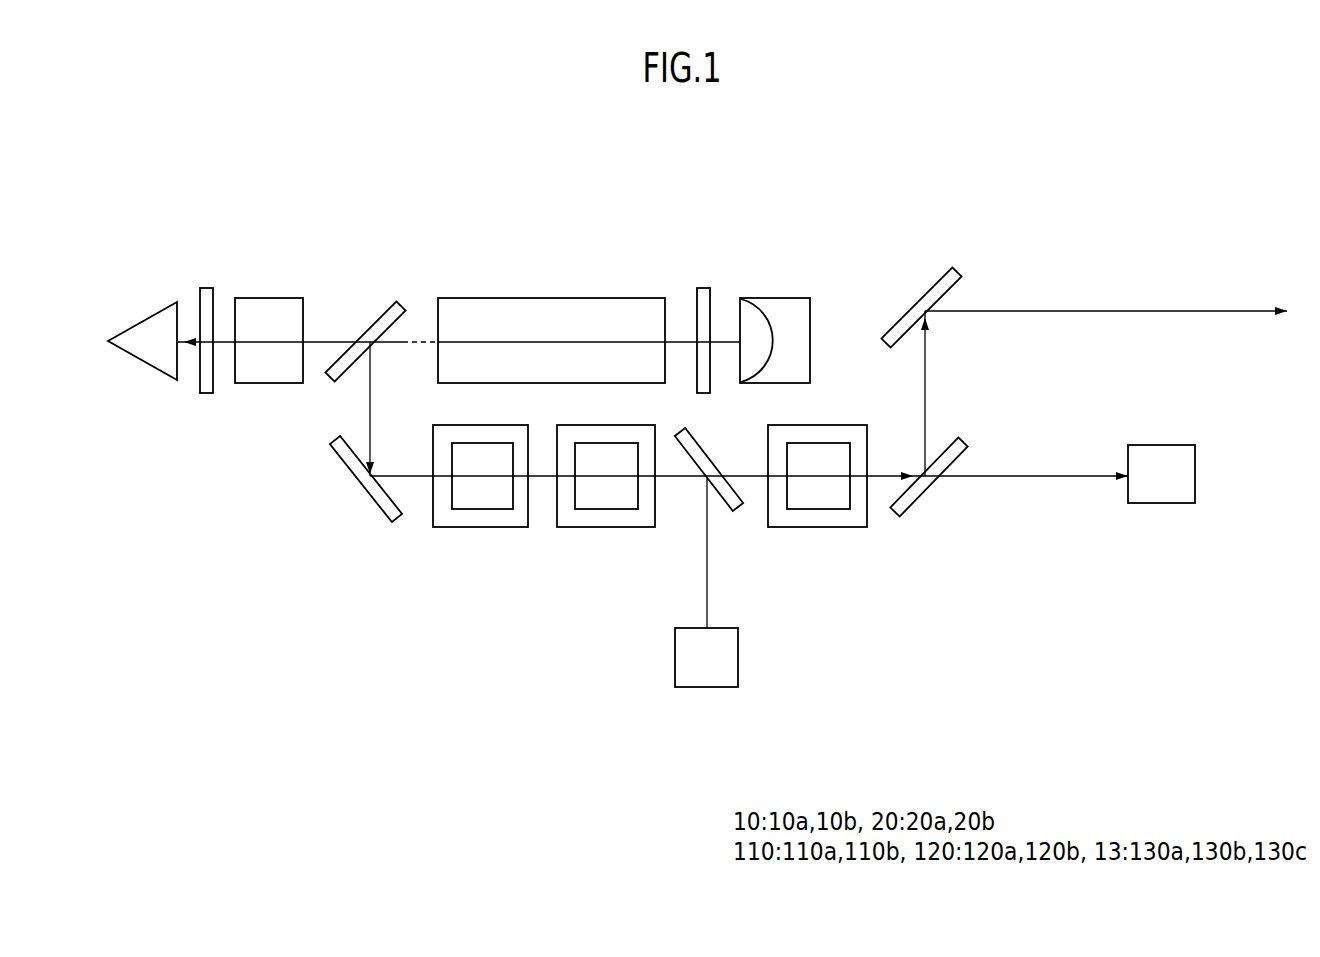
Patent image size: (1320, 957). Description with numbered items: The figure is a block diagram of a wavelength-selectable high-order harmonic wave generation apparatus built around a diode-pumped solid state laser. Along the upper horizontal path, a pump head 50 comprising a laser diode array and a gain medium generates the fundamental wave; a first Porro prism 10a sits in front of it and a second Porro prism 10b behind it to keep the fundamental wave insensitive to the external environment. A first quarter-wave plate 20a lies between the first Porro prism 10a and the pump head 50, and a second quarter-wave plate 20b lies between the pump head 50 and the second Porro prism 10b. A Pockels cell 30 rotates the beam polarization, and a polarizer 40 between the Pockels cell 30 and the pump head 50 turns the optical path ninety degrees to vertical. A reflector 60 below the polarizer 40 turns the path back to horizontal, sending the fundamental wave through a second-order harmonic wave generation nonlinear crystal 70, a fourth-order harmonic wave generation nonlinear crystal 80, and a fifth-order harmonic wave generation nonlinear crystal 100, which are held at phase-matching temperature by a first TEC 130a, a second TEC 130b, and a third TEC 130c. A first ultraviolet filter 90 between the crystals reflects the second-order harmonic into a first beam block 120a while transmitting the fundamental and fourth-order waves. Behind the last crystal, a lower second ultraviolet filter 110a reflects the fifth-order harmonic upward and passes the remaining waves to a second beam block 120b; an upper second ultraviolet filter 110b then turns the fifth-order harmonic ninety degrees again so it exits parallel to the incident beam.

The first Porro prism 10a is at (143, 320).
The second Porro prism 10b is at (775, 298).
The first quarter-wave plate 20a is at (207, 288).
The second quarter-wave plate 20b is at (700, 290).
The Pockels cell 30 is at (268, 298).
The polarizer 40 is at (372, 323).
The pump head 50 is at (550, 298).
The reflector 60 is at (358, 487).
The second-order harmonic wave generation nonlinear crystal 70 is at (462, 509).
The fourth-order harmonic wave generation nonlinear crystal 80 is at (588, 509).
The first ultraviolet filter 90 is at (738, 507).
The fifth-order harmonic wave generation nonlinear crystal 100 is at (818, 509).
The 2-1-th ultraviolet filter 110a is at (922, 495).
The 2-2-th ultraviolet filter 110b is at (925, 292).
The first beam block 120a is at (707, 688).
The second beam block 120b is at (1195, 472).
The first TEC 130a is at (492, 527).
The second TEC 130b is at (616, 527).
The third TEC 130c is at (848, 527).